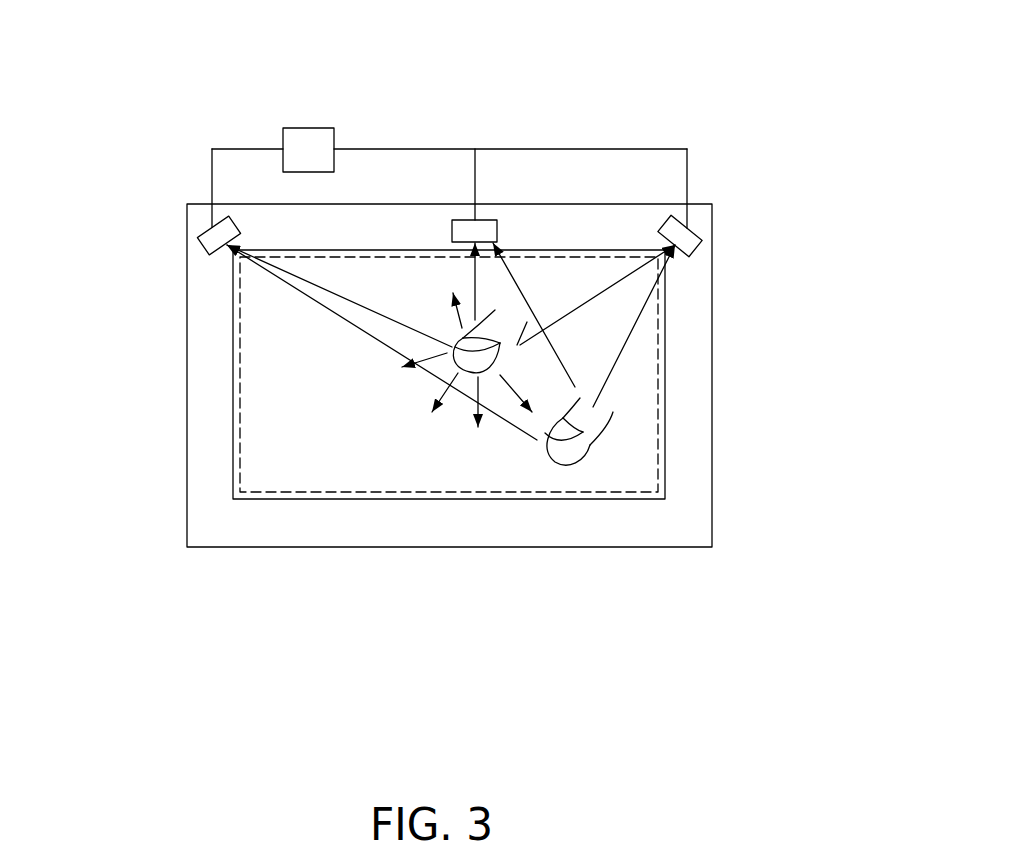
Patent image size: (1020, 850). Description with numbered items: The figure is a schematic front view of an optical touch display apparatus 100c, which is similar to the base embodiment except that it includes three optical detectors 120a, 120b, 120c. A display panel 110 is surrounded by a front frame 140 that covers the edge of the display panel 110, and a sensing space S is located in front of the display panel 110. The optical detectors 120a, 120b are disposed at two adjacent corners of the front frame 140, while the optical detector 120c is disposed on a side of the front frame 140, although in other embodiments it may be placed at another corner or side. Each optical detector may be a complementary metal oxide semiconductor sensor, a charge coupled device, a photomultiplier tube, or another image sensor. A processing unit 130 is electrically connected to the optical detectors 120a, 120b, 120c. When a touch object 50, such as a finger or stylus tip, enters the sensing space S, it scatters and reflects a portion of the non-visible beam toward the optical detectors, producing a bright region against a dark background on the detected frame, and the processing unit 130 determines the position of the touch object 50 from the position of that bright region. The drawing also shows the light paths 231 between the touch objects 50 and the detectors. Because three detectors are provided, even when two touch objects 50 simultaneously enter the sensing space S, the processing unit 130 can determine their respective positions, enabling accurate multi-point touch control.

The optical touch display apparatus 100c is at (803, 633).
The display panel 110 is at (297, 452).
The optical detector 120a is at (210, 243).
The optical detector 120b is at (698, 233).
The optical detector 120c is at (497, 228).
The processing unit 130 is at (313, 128).
The front frame 140 is at (697, 458).
The sensing light path 231 is at (313, 285).
The touch object 50 is at (502, 355).
The sensing space S is at (658, 298).